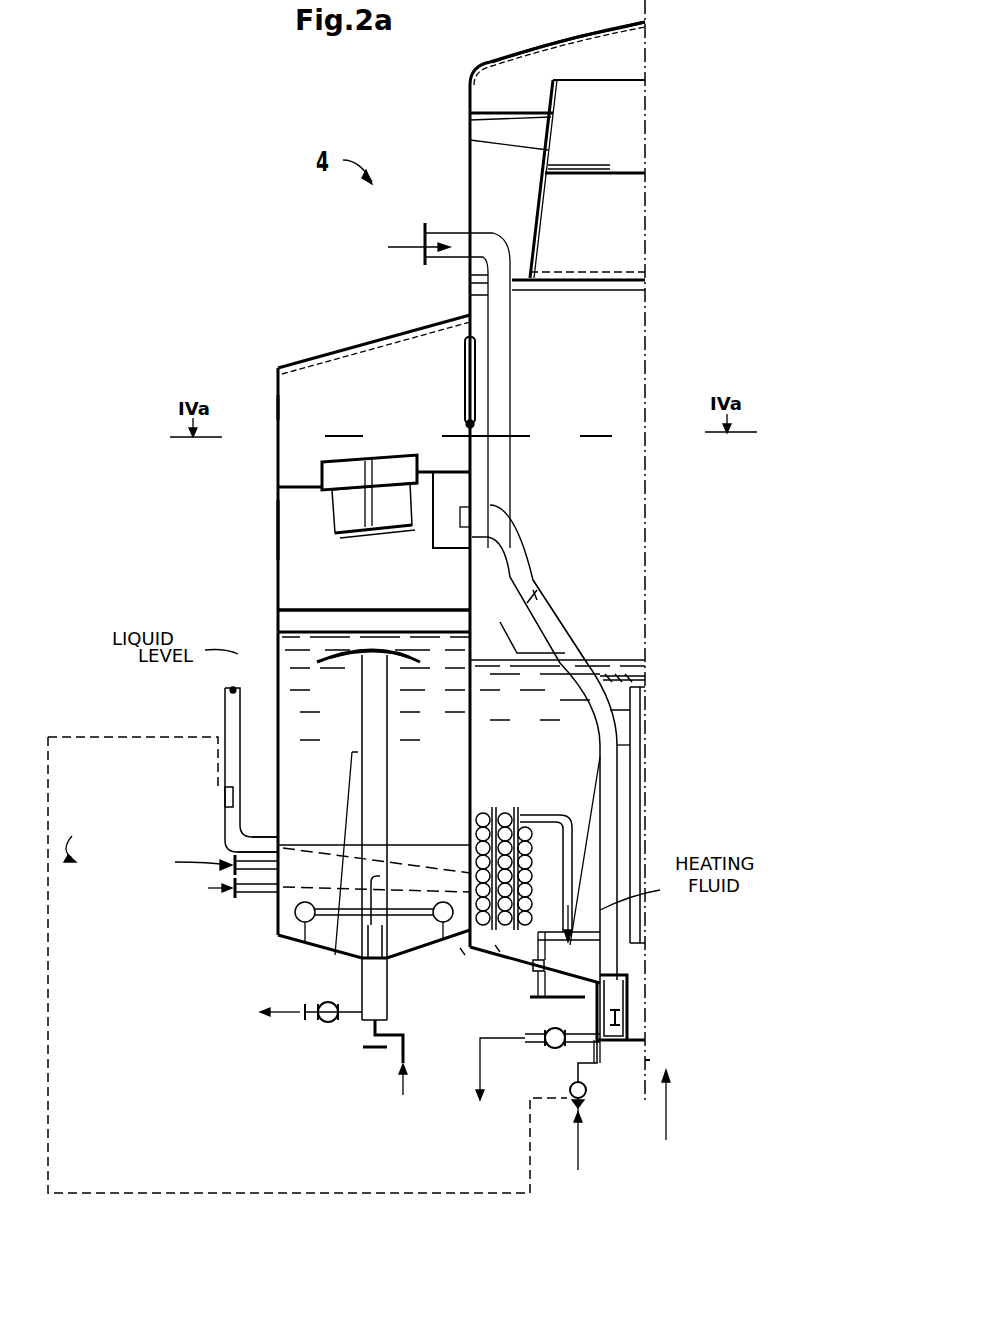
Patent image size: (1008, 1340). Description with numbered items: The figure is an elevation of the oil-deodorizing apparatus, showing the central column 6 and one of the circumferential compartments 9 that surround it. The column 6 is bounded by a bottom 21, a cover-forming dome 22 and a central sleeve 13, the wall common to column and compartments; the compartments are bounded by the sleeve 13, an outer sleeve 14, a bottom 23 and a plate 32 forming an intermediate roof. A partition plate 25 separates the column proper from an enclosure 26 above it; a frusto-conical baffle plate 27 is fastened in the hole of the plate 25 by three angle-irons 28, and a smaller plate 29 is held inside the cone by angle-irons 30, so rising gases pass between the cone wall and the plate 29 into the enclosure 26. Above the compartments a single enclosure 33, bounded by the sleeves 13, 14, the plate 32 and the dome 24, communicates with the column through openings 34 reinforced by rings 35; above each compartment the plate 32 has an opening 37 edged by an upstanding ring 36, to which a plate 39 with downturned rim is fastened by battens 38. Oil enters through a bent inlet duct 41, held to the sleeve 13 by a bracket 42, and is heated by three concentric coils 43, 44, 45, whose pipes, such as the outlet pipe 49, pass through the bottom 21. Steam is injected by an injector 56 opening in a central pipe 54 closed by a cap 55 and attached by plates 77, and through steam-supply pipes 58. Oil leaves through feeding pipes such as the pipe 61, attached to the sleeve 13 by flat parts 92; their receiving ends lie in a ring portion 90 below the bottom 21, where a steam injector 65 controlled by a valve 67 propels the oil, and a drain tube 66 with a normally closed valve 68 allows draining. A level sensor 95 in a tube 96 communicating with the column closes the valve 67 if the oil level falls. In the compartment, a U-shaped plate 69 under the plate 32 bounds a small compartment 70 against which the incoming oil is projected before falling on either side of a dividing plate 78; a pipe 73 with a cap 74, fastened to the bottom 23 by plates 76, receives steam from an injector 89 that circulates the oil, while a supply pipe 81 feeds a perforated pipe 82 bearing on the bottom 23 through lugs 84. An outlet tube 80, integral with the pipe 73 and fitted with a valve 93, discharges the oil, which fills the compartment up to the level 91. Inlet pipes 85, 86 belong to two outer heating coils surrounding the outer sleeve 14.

The central column 6 is at (630, 580).
The circumferential compartment 9 is at (290, 600).
The central sleeve 13 is at (470, 780).
The outer sleeve 14 is at (278, 500).
The bottom 21 is at (535, 979).
The cover-forming dome 22 is at (518, 50).
The bottom 23 is at (315, 945).
The dome or roof 24 is at (328, 352).
The partition plate 25 is at (500, 235).
The enclosure 26 is at (603, 50).
The frusto-conical baffle plate 27 is at (545, 150).
The angle-irons 28 is at (500, 113).
The plate 29 is at (625, 175).
The angle-irons 30 is at (585, 168).
The plate forming an intermediate roof 32 is at (300, 487).
The single enclosure 33 is at (297, 407).
The openings 34 is at (473, 395).
The rings 35 is at (470, 423).
The upstanding ring 36 is at (322, 470).
The opening 37 is at (355, 495).
The battens 38 is at (392, 500).
The plate with downturned rim 39 is at (390, 530).
The inlet duct 41 is at (503, 315).
The bracket 42 is at (520, 652).
The inner coil 43 is at (533, 965).
The middle coil 44 is at (495, 945).
The concentric coil 45 is at (460, 948).
The outlet pipe 49 is at (600, 985).
The central pipe 54 is at (640, 780).
The cap 55 is at (617, 678).
The injector 56 is at (650, 1060).
The steam-supply pipes 58 is at (535, 997).
The feeding pipe 61 is at (557, 635).
The steam injector 65 is at (597, 1067).
The drain tube 66 is at (585, 1045).
The valve 67 is at (576, 1153).
The valve 68 is at (550, 1048).
The U-shaped plate 69 is at (433, 540).
The small compartment 70 is at (457, 490).
The pipe 73 is at (367, 718).
The cap 74 is at (317, 660).
The plates 76 is at (355, 780).
The plates 77 is at (597, 810).
The plate 78 is at (395, 608).
The outlet tube 80 is at (362, 1012).
The steam supply pipe 81 is at (235, 892).
The pipe 82 is at (430, 905).
The lugs 84 is at (423, 940).
The inlet pipe 85 is at (171, 839).
The inlet pipe 86 is at (374, 868).
The steam injector 89 is at (406, 1057).
The ring portion 90 is at (627, 1015).
The oil level 91 is at (322, 650).
The flat parts 92 is at (478, 562).
The valve 93 is at (328, 1022).
The level sensor 95 is at (225, 797).
The tube 96 is at (232, 840).